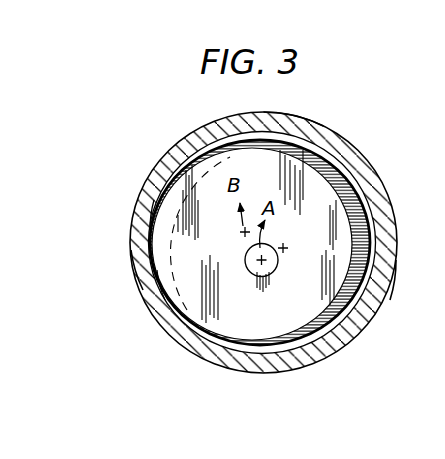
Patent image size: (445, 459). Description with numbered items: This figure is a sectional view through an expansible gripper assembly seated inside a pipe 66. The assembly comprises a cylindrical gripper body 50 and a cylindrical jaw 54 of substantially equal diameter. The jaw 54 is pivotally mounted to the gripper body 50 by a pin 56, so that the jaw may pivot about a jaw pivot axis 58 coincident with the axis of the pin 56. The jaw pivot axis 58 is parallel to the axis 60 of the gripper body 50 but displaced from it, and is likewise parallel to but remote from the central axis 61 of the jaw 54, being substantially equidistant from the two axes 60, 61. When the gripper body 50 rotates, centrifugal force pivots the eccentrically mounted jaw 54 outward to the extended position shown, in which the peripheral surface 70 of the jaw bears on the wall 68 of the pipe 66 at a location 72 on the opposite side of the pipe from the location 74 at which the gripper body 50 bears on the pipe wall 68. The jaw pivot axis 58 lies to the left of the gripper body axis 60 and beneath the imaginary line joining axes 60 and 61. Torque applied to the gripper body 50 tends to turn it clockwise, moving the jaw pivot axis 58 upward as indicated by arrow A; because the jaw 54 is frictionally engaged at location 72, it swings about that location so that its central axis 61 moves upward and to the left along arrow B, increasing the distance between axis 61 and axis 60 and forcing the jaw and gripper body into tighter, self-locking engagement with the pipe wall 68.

The gripper body 50 is at (340, 306).
The jaw 54 is at (241, 128).
The pin 56 is at (270, 293).
The jaw pivot axis 58 is at (258, 276).
The gripper body axis 60 is at (284, 253).
The jaw central axis 61 is at (243, 233).
The pipe 66 is at (250, 378).
The pipe wall 68 is at (140, 283).
The peripheral surface 70 is at (184, 312).
The location 72 is at (148, 206).
The location 74 is at (380, 281).